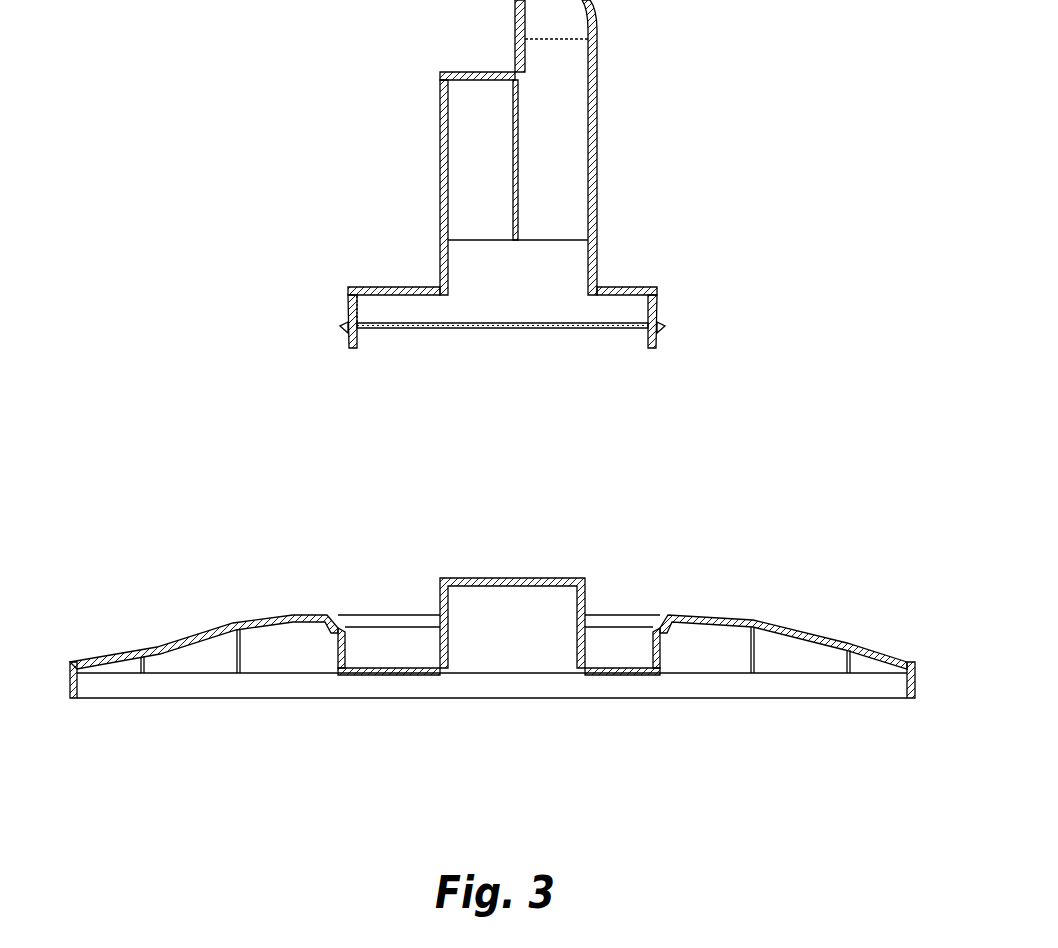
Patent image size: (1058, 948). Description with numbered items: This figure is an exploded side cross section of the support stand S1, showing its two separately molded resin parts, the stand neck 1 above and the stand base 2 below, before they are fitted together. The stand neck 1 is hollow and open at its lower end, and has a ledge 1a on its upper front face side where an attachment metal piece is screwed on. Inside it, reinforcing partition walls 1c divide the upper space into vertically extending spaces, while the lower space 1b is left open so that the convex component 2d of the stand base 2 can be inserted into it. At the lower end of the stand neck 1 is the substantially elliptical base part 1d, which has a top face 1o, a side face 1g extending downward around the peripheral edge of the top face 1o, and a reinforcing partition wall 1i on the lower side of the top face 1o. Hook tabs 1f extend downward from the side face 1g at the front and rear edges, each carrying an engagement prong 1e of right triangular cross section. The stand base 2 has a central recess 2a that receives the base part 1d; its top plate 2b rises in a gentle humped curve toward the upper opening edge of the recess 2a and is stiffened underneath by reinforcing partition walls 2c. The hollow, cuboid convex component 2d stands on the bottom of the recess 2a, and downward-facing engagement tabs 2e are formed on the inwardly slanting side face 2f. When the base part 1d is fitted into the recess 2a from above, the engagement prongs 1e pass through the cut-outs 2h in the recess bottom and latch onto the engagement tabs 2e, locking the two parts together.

The support stand S1 is at (254, 126).
The stand neck 1 is at (440, 150).
The ledge 1a is at (485, 70).
The lower space 1b is at (513, 308).
The reinforcing partition walls 1c is at (517, 180).
The base part 1d is at (405, 286).
The engagement prong 1e is at (340, 327).
The hook tabs 1f is at (348, 308).
The side face 1g is at (580, 330).
The reinforcing partition wall 1i is at (402, 313).
The top face 1o is at (622, 286).
The stand base 2 is at (733, 615).
The recess 2a is at (400, 667).
The top plate 2b is at (488, 608).
The reinforcing partition walls 2c is at (800, 653).
The convex component 2d is at (522, 577).
The engagement tabs 2e is at (335, 643).
The side face 2f is at (618, 640).
The cut-outs 2h is at (357, 674).